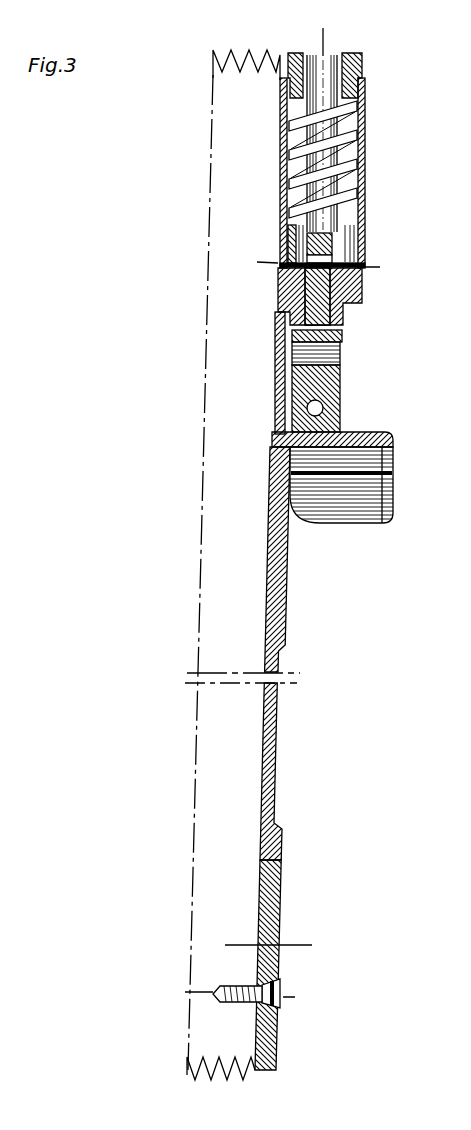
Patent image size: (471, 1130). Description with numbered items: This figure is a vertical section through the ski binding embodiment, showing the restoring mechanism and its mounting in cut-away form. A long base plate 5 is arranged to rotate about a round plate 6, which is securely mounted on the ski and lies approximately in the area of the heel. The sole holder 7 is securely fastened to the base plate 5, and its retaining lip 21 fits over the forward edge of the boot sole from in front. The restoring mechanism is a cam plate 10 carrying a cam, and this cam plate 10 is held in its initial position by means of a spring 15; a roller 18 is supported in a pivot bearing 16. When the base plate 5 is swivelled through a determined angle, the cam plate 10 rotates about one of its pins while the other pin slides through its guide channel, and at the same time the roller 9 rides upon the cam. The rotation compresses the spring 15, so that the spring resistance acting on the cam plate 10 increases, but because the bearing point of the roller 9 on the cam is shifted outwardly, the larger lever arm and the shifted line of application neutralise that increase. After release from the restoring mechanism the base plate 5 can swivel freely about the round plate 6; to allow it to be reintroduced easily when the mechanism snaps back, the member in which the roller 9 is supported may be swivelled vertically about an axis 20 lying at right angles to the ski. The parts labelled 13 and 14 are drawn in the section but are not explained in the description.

The base plate 5 is at (275, 580).
The round plate 6 is at (280, 912).
The sole holder 7 is at (393, 441).
The roller 9 is at (342, 336).
The cam plate 10 is at (312, 303).
The housing tube 13 is at (366, 152).
The cap 14 is at (362, 83).
The spring 15 is at (361, 206).
The pivot bearing 16 is at (290, 186).
The roller 18 is at (308, 245).
The axis 20 is at (340, 401).
The retaining lip 21 is at (383, 503).